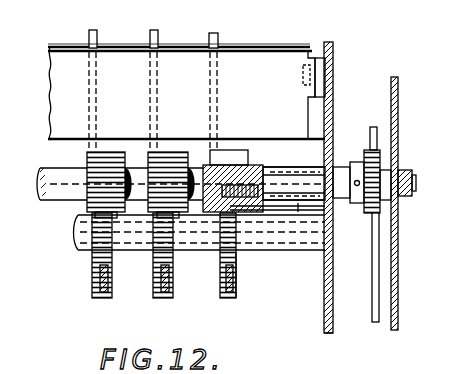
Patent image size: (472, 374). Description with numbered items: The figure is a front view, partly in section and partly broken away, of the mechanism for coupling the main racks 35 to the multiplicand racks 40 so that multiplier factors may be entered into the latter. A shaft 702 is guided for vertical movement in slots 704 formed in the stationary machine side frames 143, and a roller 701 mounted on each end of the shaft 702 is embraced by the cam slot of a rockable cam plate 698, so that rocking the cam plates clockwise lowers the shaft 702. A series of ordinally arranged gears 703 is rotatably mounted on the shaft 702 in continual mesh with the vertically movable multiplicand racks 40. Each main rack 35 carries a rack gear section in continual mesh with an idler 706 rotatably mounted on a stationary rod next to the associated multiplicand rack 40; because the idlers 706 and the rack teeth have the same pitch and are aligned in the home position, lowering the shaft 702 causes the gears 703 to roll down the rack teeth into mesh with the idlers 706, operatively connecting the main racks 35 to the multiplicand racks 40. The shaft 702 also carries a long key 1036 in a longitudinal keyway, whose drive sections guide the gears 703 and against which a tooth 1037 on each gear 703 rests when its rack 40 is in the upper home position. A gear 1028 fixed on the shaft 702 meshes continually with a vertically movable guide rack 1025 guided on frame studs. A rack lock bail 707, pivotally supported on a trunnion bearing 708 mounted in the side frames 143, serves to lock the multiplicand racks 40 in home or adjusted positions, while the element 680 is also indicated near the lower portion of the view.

The multiplicand rack 40 is at (210, 40).
The rack lock bail 707 is at (298, 36).
The trunnion bearing 708 is at (330, 74).
The rockable cam plate 698 is at (398, 121).
The gear 1028 is at (377, 142).
The shaft 702 is at (416, 183).
The roller 701 is at (401, 170).
The gear 703 is at (155, 160).
The key 1036 is at (262, 186).
The slot 704 is at (329, 236).
The tooth 1037 is at (78, 218).
The idler 706 is at (108, 262).
The main rack 35 is at (237, 276).
The guide rack 1025 is at (379, 267).
The machine side frame 143 is at (336, 328).
The base 680 is at (469, 373).